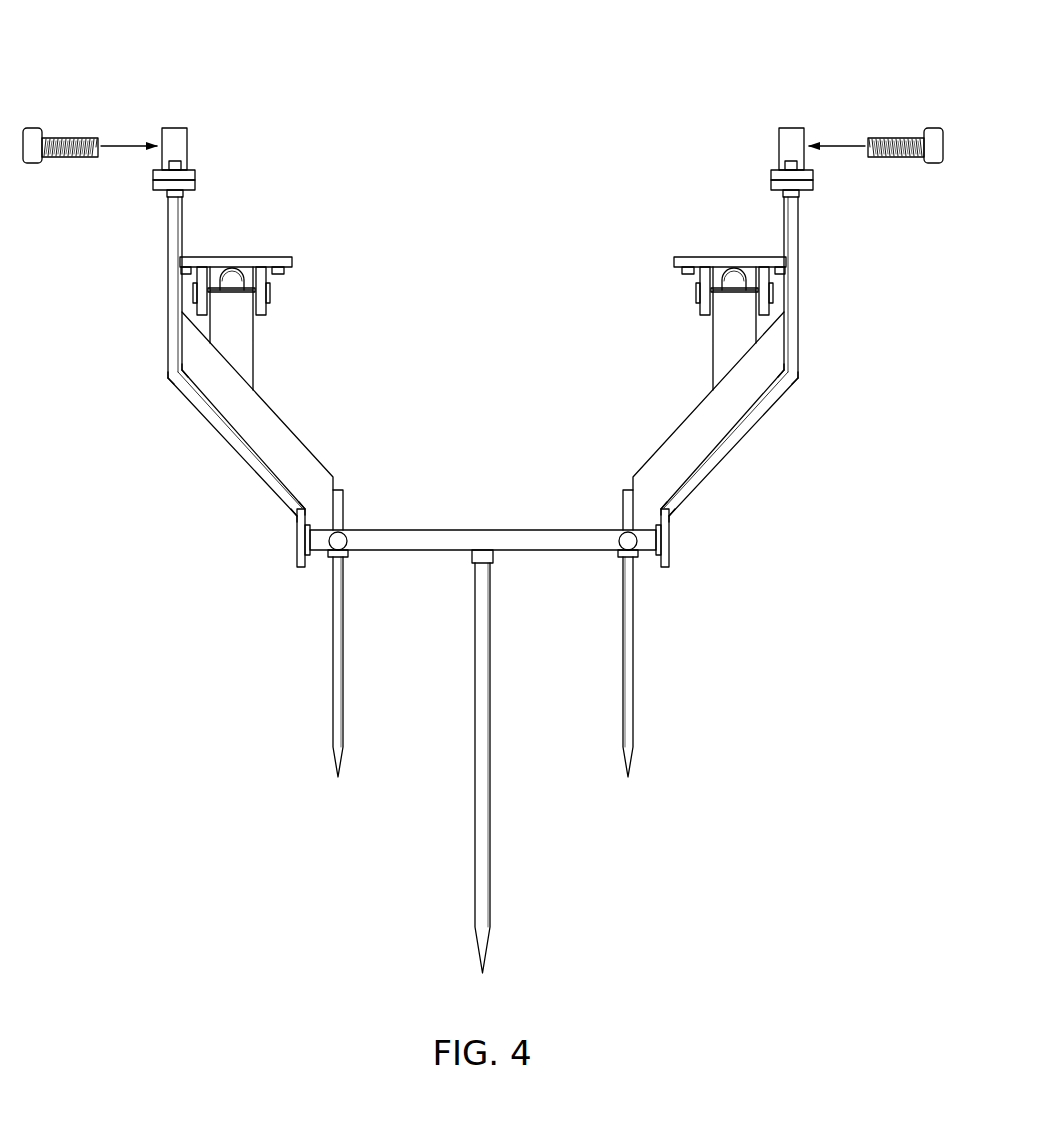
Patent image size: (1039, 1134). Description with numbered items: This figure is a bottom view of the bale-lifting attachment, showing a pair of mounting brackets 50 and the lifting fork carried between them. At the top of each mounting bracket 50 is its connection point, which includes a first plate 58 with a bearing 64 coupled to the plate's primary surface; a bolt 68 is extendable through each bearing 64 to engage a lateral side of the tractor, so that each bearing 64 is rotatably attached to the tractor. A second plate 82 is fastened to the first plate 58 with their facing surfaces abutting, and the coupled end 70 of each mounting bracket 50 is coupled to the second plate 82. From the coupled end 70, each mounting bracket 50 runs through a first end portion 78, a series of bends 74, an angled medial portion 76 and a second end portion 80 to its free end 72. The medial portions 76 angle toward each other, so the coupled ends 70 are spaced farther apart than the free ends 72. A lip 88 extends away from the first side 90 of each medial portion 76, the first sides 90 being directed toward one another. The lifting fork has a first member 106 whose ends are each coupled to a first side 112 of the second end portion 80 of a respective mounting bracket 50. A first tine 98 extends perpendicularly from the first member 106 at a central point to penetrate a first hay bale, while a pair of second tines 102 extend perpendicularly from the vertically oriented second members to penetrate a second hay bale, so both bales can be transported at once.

The mounting bracket 50 is at (458, 370).
The first plate 58 is at (152, 172).
The bearing 64 is at (175, 128).
The bolt 68 is at (42, 128).
The coupled end 70 is at (187, 200).
The free end 72 is at (302, 570).
The bend 74 is at (164, 390).
The medial portion 76 is at (220, 447).
The first end portion 78 is at (158, 290).
The second end portion 80 is at (288, 550).
The second plate 82 is at (157, 192).
The lip 88 is at (308, 447).
The first side 90 is at (243, 441).
The first tine 98 is at (475, 858).
The second tine 102 is at (333, 692).
The first member 106 is at (532, 528).
The first side 112 is at (312, 523).